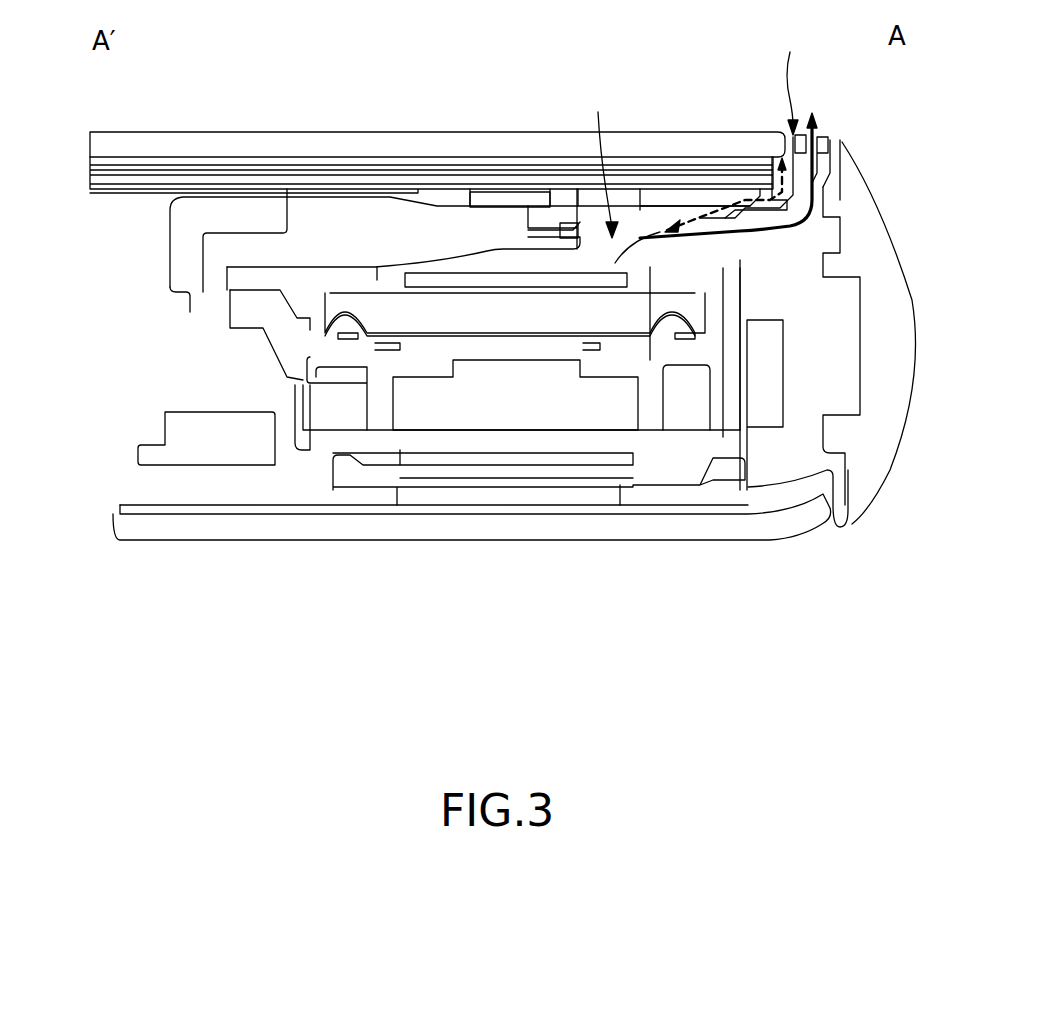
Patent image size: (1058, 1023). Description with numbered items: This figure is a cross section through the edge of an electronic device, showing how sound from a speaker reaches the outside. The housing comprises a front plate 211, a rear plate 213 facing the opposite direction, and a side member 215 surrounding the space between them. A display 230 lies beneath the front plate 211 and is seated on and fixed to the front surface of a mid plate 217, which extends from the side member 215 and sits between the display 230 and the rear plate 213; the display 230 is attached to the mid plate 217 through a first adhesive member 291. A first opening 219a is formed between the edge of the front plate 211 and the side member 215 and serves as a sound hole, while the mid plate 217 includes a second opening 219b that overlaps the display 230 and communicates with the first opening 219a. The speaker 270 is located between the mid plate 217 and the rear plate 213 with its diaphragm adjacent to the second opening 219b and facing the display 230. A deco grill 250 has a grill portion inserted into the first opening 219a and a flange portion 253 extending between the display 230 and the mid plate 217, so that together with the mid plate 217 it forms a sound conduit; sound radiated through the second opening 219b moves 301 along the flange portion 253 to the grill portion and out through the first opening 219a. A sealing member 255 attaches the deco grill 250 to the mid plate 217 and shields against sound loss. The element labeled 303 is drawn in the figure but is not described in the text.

The front plate 211 is at (241, 131).
The display 230 is at (90, 170).
The mid plate 217 is at (172, 244).
The side member 215 is at (870, 205).
The rear plate 213 is at (286, 541).
The speaker 270 is at (548, 412).
The flange portion 253 is at (642, 208).
The sealing member 255 is at (556, 215).
The first adhesive member 291 is at (483, 192).
The flexible printed circuit board 303 is at (747, 195).
The first opening 219a is at (787, 81).
The second opening 219b is at (681, 163).
The sound movement to grill portion 301 is at (815, 127).
The deco grill 250 is at (820, 126).